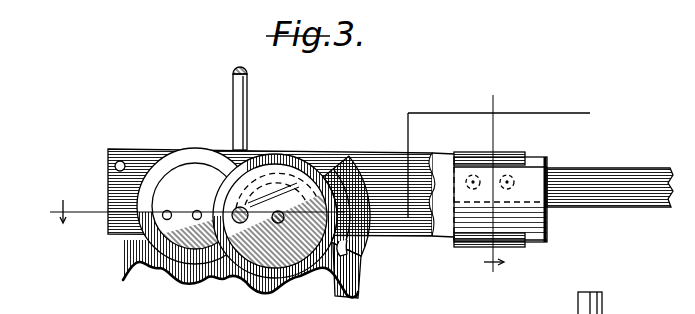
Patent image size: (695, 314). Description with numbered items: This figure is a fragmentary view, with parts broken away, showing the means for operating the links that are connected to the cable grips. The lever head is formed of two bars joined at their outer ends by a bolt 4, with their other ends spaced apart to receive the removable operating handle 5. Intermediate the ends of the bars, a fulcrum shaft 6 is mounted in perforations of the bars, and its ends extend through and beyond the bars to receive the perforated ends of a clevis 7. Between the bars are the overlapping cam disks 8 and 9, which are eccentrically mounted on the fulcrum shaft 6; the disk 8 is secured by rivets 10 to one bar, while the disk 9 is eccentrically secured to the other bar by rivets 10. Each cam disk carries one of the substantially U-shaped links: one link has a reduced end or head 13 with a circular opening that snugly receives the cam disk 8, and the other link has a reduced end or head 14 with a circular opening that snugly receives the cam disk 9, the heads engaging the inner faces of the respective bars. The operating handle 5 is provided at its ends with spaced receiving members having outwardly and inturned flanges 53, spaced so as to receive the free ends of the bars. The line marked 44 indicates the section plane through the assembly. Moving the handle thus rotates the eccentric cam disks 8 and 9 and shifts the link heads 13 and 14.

The bolt 4 is at (124, 162).
The removable operating handle 5 is at (602, 168).
The fulcrum shaft 6 is at (258, 203).
The clevis 7 is at (244, 115).
The cam disk 8 is at (180, 279).
The cam disk 9 is at (296, 283).
The rivets 10 is at (195, 210).
The reduced end or head 13 is at (222, 284).
The reduced end or head 14 is at (348, 262).
The section line 44 is at (317, 183).
The inturned flanges 53 is at (525, 152).